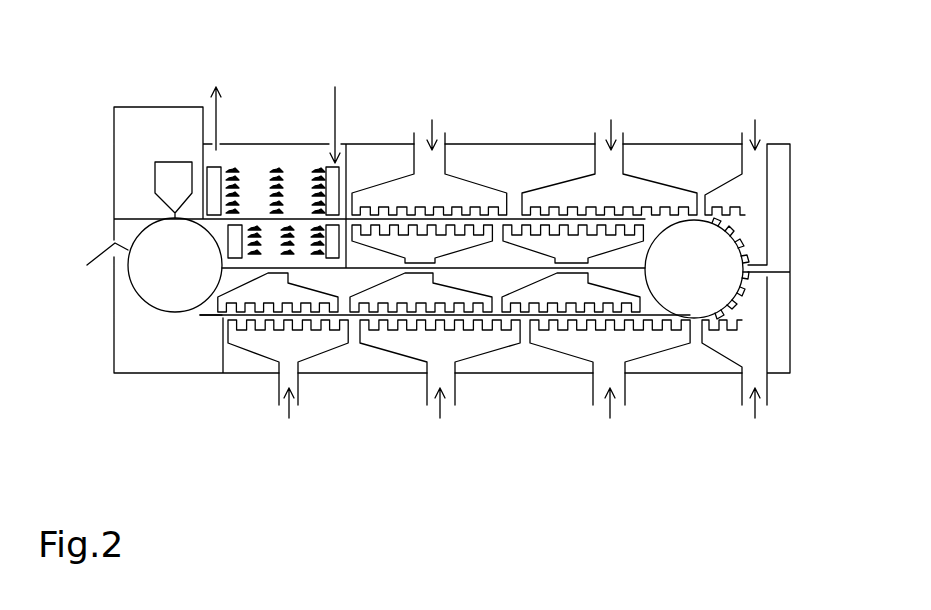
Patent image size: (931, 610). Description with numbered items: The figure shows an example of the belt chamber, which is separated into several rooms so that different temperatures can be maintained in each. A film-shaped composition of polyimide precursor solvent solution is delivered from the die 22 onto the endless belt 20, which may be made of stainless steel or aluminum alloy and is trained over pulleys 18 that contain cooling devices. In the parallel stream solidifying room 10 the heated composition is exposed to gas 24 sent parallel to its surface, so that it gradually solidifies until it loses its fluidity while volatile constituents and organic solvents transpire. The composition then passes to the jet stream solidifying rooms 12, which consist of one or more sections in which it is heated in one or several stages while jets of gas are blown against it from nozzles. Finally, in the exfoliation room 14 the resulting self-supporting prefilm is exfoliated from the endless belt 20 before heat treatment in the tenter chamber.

The parallel stream solidifying room 10 is at (247, 168).
The jet stream solidifying rooms 12 is at (520, 168).
The exfoliation room 14 is at (137, 342).
The pulleys 18 is at (138, 285).
The endless belt 20 is at (207, 298).
The die 22 is at (175, 165).
The gas 24 is at (317, 168).